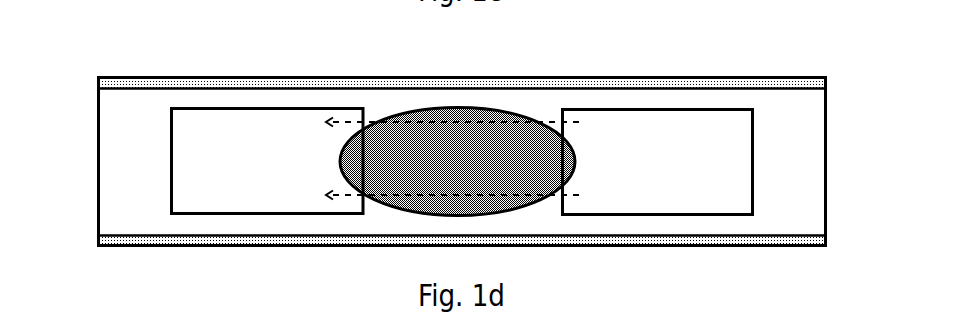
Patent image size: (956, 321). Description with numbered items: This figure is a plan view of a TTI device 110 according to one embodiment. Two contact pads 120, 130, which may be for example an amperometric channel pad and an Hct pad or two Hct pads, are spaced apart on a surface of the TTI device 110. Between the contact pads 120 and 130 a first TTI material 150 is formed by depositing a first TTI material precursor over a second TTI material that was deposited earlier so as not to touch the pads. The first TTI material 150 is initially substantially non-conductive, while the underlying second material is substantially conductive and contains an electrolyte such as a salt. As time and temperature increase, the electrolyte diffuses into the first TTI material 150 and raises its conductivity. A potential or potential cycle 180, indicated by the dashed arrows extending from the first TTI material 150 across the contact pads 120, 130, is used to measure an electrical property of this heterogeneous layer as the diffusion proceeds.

The TTI device 110 is at (87, 57).
The contact pad 120 is at (192, 166).
The contact pad 130 is at (717, 160).
The first TTI material 150 is at (465, 147).
The potential or potential cycle 180 is at (563, 122).